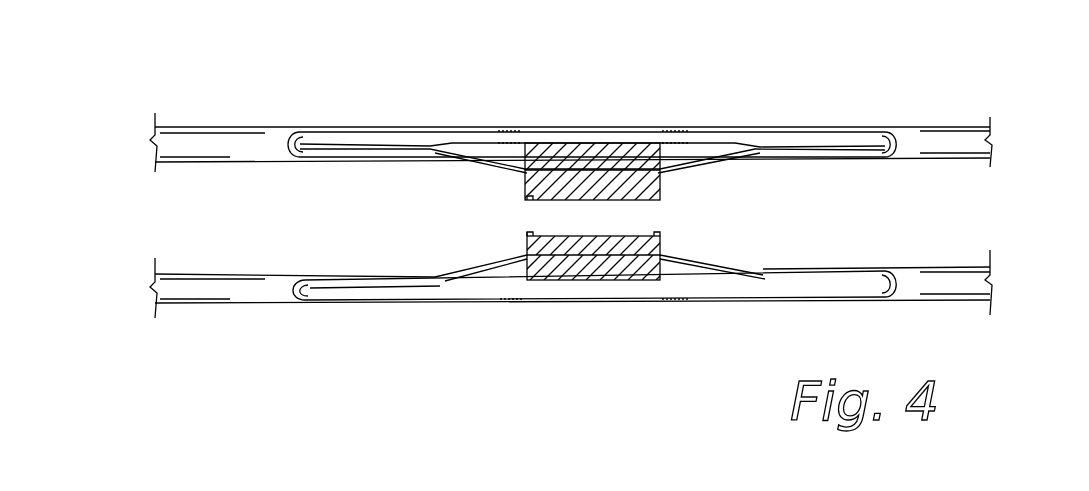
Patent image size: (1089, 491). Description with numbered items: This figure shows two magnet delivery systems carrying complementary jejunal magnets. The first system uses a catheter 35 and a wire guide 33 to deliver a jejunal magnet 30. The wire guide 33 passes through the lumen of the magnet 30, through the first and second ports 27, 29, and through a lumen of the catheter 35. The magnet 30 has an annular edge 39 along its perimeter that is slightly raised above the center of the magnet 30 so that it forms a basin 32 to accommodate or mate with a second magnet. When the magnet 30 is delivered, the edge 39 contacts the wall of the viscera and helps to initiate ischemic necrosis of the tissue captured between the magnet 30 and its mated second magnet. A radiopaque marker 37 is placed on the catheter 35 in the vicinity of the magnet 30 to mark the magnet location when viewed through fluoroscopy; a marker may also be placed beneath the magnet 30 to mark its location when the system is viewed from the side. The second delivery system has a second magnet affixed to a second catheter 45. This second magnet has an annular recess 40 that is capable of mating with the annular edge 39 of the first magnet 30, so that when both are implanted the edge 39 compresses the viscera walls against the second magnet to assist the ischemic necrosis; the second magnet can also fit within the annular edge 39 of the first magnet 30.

The second catheter 45 is at (233, 127).
The catheter 35 is at (245, 275).
The radiopaque marker 37 is at (508, 127).
The jejunal magnet 30 is at (670, 232).
The second port 29 is at (765, 274).
The first port 27 is at (437, 276).
The wire guide 33 is at (492, 264).
The annular edge 39 is at (530, 233).
The annular recess 40 is at (530, 200).
The basin 32 is at (612, 233).